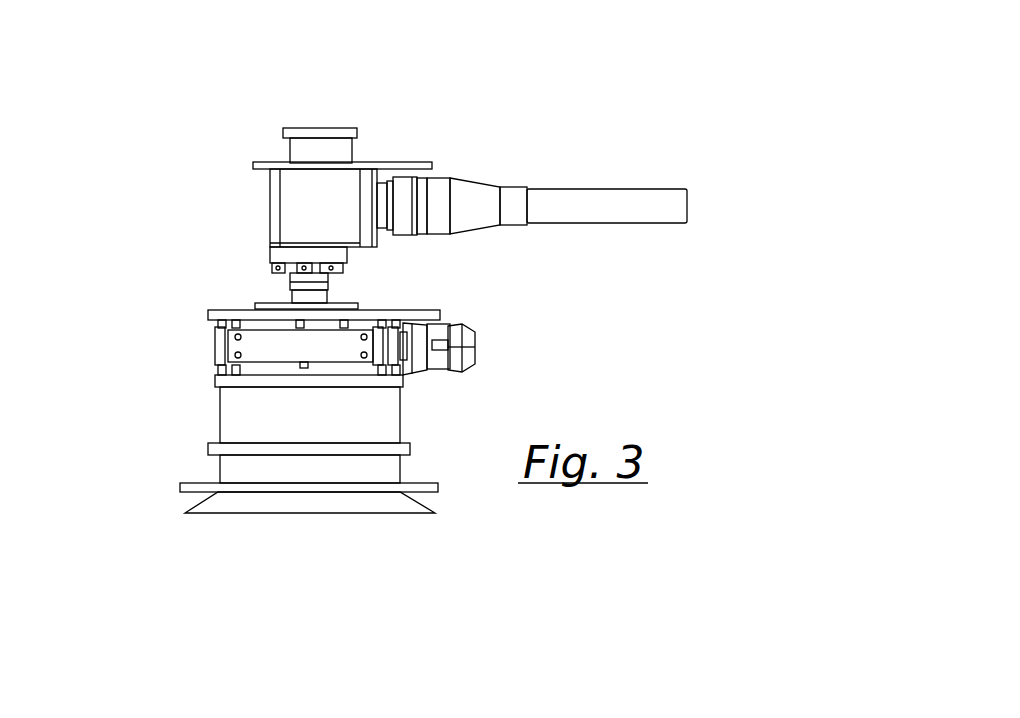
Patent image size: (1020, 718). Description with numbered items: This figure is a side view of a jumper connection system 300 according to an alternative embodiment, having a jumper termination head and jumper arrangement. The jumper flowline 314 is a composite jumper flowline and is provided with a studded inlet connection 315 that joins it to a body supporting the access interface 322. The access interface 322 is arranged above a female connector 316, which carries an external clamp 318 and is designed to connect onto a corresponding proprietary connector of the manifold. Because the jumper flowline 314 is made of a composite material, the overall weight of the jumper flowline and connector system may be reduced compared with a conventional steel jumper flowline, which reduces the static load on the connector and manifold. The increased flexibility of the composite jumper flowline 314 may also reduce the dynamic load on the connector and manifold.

The jumper connection system 300 is at (386, 260).
The jumper flowline 314 is at (618, 215).
The studded inlet connection 315 is at (373, 248).
The female connector 316 is at (243, 412).
The external clamp 318 is at (240, 345).
The access interface 322 is at (355, 152).